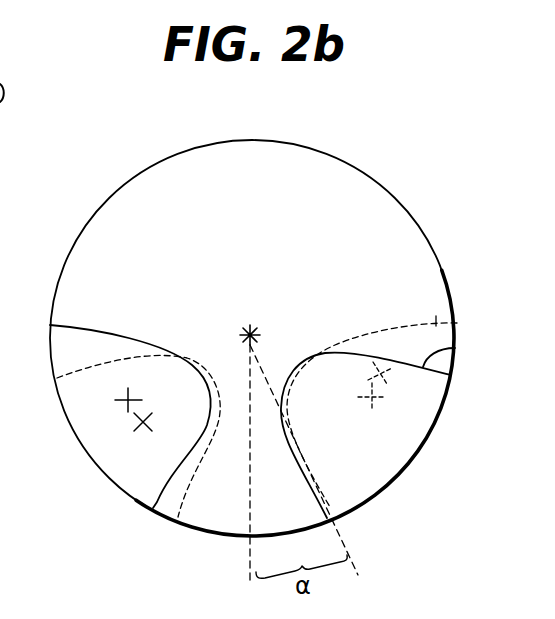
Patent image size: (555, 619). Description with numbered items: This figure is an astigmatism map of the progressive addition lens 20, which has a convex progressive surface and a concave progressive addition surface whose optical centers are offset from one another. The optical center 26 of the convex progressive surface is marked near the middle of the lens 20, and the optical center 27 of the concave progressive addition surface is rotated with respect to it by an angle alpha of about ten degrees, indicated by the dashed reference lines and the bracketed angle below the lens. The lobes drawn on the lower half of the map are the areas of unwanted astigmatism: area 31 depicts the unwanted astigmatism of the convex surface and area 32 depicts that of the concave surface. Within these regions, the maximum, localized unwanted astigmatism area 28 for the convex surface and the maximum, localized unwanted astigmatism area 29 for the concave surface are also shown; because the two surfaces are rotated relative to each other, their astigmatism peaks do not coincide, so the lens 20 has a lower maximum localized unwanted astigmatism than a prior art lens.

The lens 20 is at (362, 145).
The optical center of convex progressive surface 26 is at (250, 327).
The optical center of concave progressive addition surface 27 is at (270, 330).
The maximum localized unwanted astigmatism area for convex surface 28 is at (127, 411).
The maximum localized unwanted astigmatism area for concave surface 29 is at (143, 428).
The area of unwanted astigmatism for convex surface 31 is at (455, 348).
The area of unwanted astigmatism for concave surface 32 is at (436, 320).